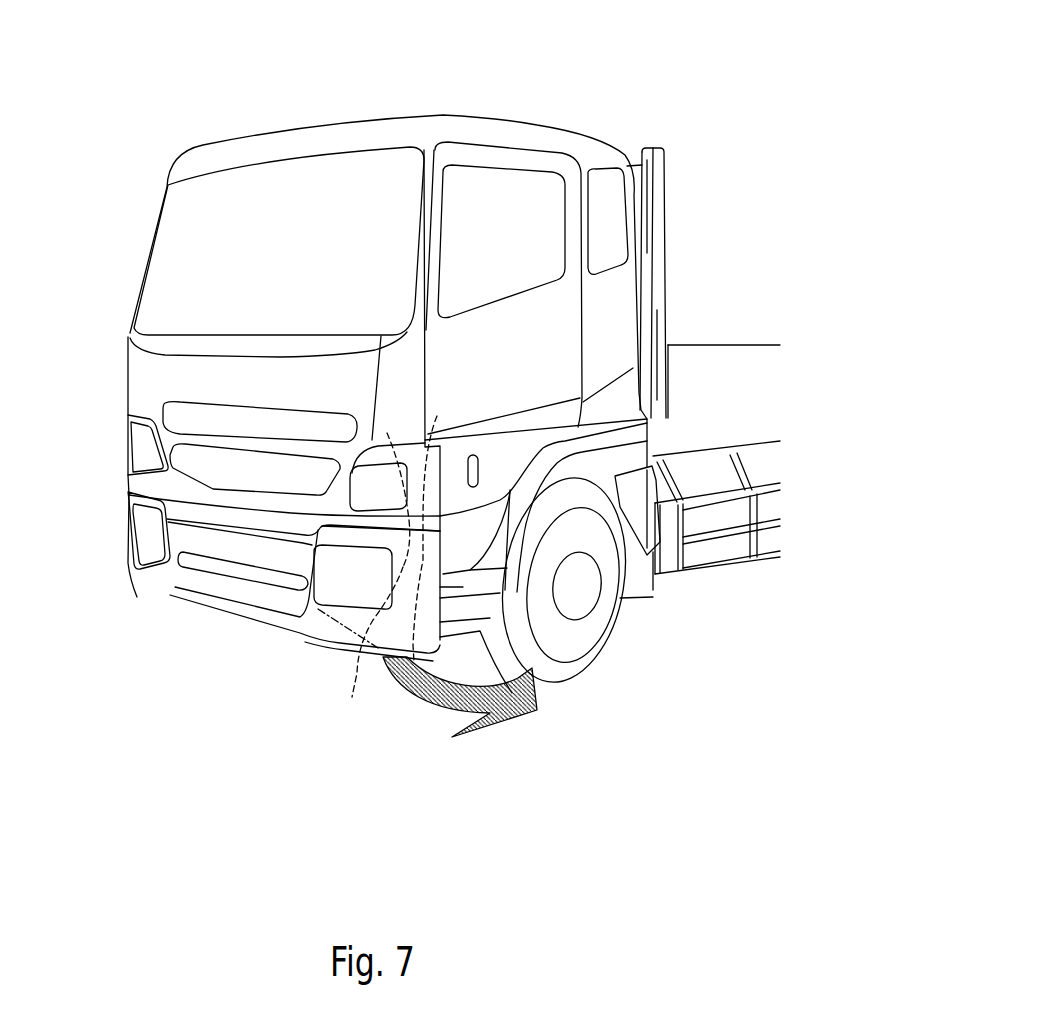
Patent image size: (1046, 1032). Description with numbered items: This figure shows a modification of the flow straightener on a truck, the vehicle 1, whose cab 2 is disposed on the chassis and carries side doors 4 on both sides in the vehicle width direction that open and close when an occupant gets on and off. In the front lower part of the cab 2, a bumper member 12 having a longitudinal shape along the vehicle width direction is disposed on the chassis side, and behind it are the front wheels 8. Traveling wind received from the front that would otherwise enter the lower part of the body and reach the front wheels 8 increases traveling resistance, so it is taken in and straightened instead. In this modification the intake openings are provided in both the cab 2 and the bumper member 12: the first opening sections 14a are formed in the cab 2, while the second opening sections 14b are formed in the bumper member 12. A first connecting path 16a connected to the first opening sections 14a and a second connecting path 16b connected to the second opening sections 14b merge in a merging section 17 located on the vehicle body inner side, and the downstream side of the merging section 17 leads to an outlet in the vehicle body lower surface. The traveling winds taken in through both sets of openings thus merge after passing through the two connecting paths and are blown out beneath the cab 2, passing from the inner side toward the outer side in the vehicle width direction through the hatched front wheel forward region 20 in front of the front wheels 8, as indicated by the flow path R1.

The vehicle 1 is at (716, 125).
The cab 2 is at (494, 116).
The side doors 4 is at (557, 342).
The front wheels 8 is at (617, 636).
The bumper member 12 is at (243, 622).
The first opening sections 14a is at (136, 585).
The second opening sections 14b is at (153, 424).
The first connecting path 16a is at (360, 647).
The second connecting path 16b is at (443, 528).
The merging section 17 is at (405, 604).
The front wheel forward region 20 is at (553, 700).
The flow path R1 is at (400, 682).